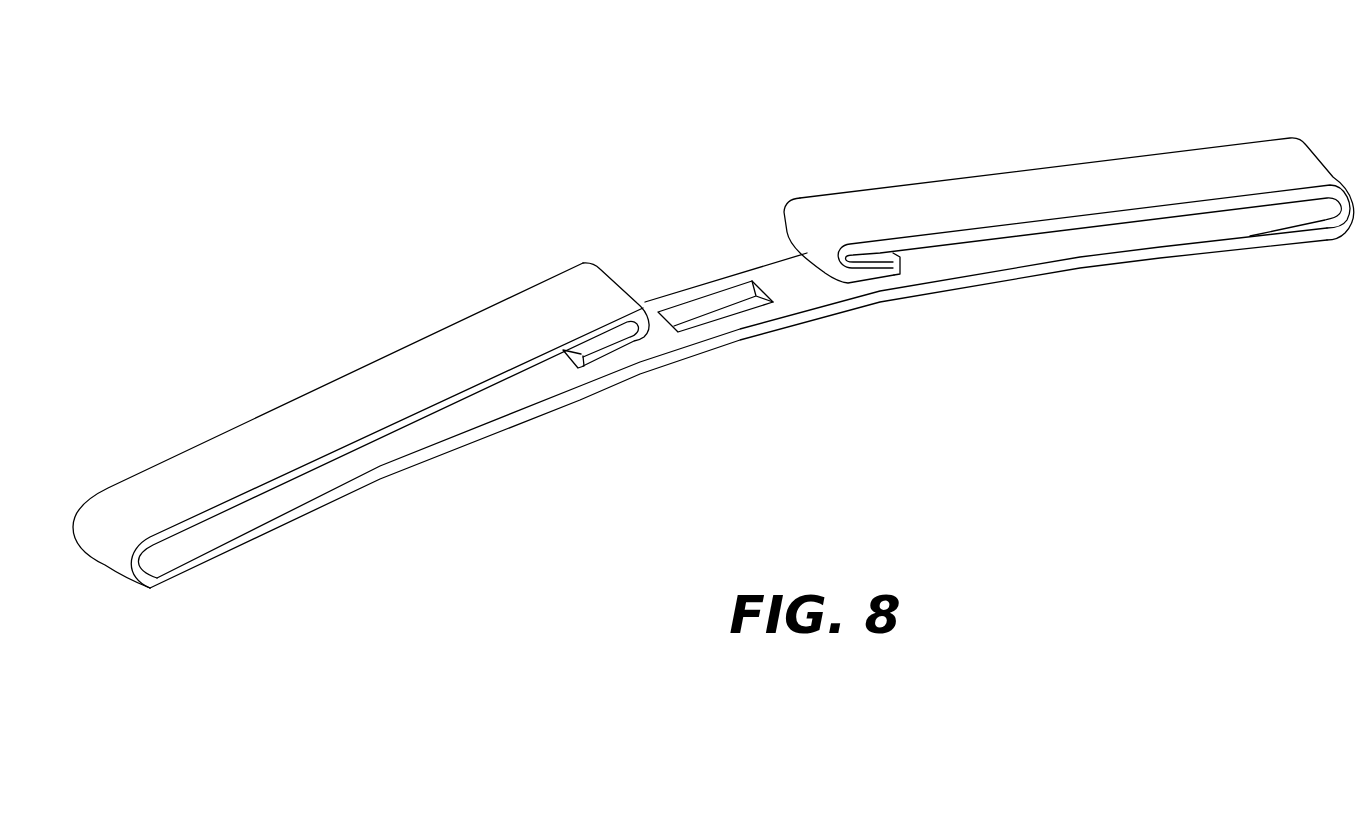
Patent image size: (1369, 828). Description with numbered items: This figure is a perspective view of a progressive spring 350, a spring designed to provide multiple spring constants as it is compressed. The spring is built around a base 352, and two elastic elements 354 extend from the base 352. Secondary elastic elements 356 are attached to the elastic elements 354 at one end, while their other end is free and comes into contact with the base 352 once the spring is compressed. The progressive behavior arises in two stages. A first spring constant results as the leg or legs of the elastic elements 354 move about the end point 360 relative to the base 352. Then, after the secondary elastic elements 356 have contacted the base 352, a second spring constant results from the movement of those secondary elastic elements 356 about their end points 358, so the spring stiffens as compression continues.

The progressive spring 350 is at (713, 375).
The base 352 is at (937, 293).
The elastic elements 354 is at (1131, 156).
The secondary elastic elements 356 is at (600, 353).
The end points 358 is at (787, 213).
The end point 360 is at (113, 560).